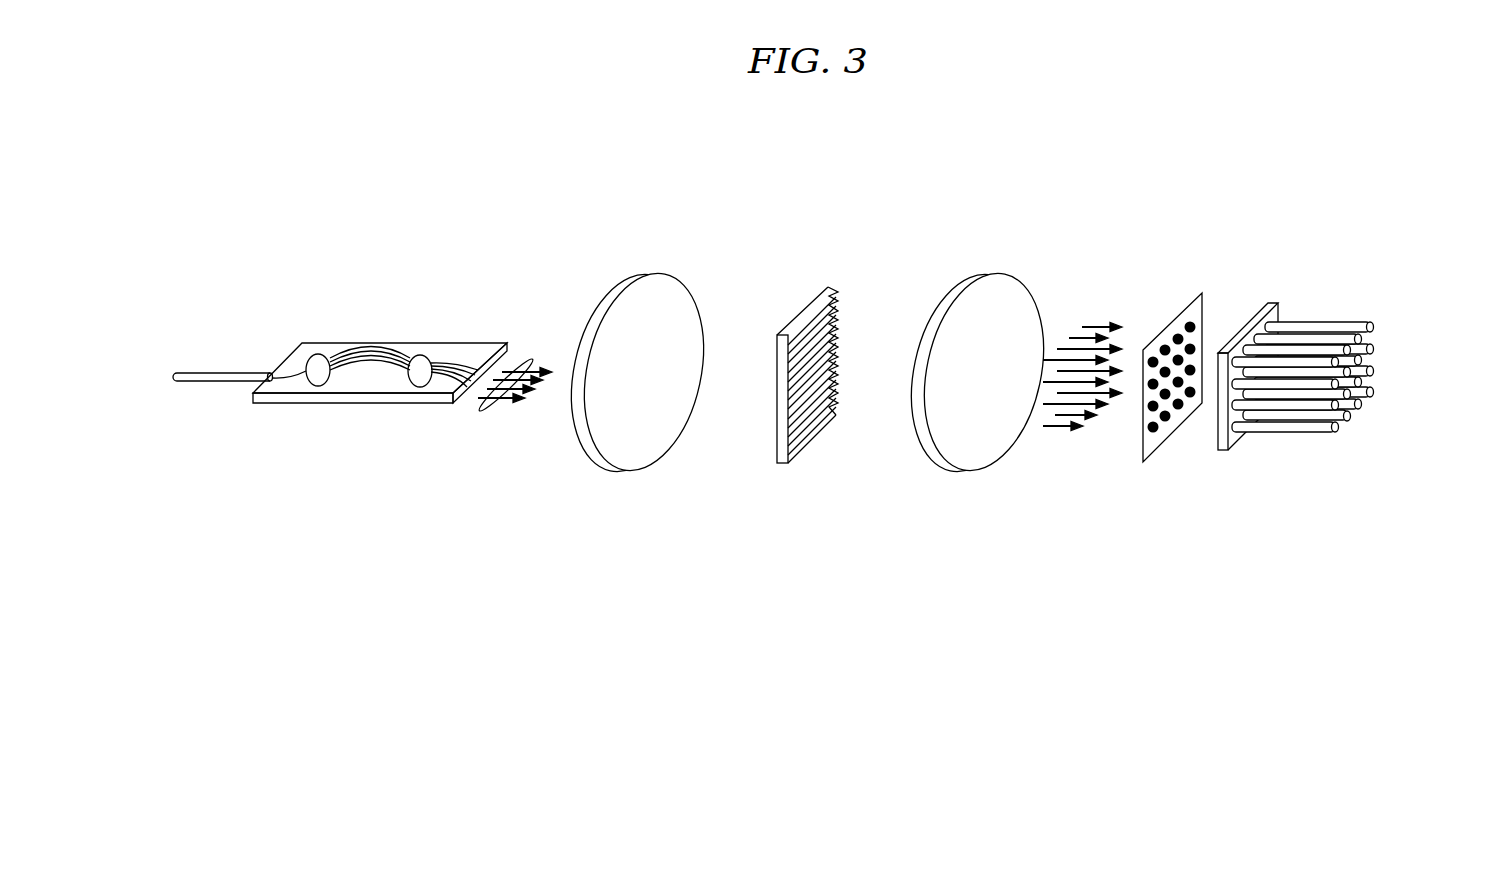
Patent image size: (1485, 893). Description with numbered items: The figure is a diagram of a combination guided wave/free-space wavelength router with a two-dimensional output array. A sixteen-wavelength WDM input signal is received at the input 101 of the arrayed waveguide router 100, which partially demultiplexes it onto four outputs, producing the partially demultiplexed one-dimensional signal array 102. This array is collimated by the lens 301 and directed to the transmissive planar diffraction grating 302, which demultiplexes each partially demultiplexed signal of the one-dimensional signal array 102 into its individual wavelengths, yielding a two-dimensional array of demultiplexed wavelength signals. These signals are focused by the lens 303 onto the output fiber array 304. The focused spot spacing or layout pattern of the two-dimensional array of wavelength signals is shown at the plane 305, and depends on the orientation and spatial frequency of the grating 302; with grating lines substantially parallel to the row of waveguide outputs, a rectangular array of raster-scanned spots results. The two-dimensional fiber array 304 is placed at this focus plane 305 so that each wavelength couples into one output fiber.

The arrayed waveguide router (AWR) 100 is at (512, 312).
The input 101 is at (222, 372).
The partially demultiplexed one-dimensional signal array 102 is at (535, 356).
The lens 301 is at (657, 273).
The transmissive planar diffraction grating 302 is at (805, 300).
The lens 303 is at (997, 273).
The output fiber array 304 is at (1330, 305).
The plane 305 is at (1167, 322).